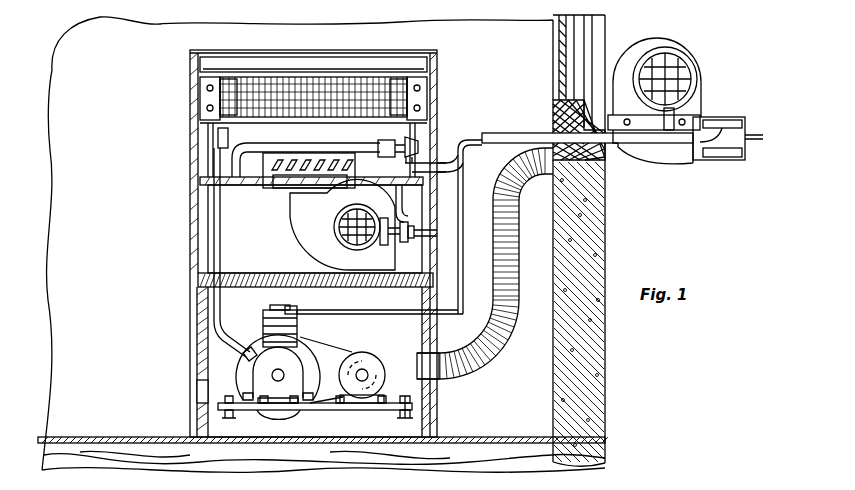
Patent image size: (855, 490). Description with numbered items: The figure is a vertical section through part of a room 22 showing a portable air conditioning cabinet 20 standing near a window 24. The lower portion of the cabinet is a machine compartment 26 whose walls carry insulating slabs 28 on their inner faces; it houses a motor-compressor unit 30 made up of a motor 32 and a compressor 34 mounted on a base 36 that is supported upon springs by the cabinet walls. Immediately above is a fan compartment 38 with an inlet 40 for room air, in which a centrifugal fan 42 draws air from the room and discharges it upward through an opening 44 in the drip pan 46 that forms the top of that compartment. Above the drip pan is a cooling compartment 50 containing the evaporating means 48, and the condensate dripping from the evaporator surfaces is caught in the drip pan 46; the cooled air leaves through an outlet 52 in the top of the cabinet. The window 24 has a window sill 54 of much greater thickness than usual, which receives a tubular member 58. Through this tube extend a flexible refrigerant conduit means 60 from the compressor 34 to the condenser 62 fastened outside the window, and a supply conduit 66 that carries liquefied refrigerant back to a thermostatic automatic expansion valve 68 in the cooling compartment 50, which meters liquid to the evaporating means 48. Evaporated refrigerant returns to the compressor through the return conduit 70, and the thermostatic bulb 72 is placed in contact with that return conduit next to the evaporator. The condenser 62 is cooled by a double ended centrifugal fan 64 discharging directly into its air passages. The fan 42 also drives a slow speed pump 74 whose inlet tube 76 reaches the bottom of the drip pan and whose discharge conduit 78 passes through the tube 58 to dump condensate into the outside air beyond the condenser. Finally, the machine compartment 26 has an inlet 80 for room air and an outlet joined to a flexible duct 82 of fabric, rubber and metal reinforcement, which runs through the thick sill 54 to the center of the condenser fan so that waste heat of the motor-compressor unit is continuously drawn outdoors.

The air conditioning cabinet 20 is at (196, 281).
The room 22 is at (565, 390).
The window 24 is at (555, 55).
The machine compartment 26 is at (294, 362).
The insulating slabs 28 is at (272, 289).
The motor-compressor unit 30 is at (412, 408).
The motor 32 is at (377, 357).
The compressor 34 is at (263, 325).
The base 36 is at (350, 410).
The fan compartment 38 is at (315, 229).
The inlet 40 is at (195, 230).
The centrifugal fan 42 is at (330, 248).
The opening 44 is at (272, 188).
The drip pan 46 is at (203, 181).
The evaporating means 48 is at (265, 95).
The cooling compartment 50 is at (306, 149).
The outlet 52 is at (340, 57).
The window sill 54 is at (555, 118).
The tubular member 58 is at (491, 135).
The flexible refrigerant conduit means 60 is at (380, 306).
The condenser 62 is at (720, 119).
The double ended centrifugal fan 64 is at (668, 50).
The supply conduit 66 is at (445, 157).
The thermostatic automatic expansion valve 68 is at (398, 141).
The return conduit 70 is at (221, 252).
The thermostatic bulb 72 is at (216, 136).
The slow speed pump 74 is at (400, 242).
The tube 76 is at (400, 206).
The discharge conduit 78 is at (445, 233).
The inlet 80 is at (197, 390).
The flexible duct 82 is at (500, 338).